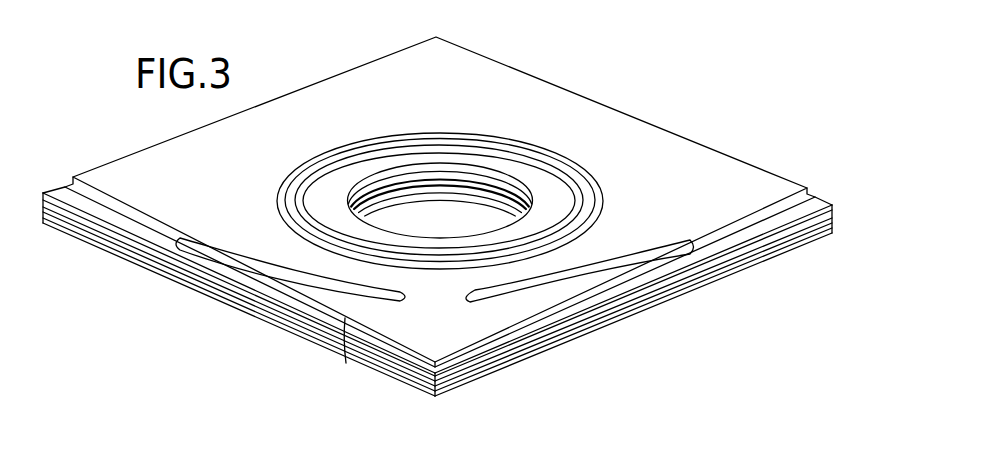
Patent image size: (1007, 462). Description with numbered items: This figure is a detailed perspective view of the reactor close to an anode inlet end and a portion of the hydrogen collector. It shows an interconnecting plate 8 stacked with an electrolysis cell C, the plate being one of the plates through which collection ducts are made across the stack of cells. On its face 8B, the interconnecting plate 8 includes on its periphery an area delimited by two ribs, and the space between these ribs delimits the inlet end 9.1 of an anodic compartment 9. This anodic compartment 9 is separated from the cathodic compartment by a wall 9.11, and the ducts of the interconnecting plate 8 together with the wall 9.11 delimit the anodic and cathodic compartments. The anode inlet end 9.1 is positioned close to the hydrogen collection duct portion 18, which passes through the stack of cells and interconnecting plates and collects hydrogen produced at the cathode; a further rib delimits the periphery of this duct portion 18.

The face of interconnecting plate 8B is at (460, 73).
The anodic compartment 9 is at (698, 194).
The interconnecting plate 8 is at (834, 233).
The hydrogen collection duct portion 18 is at (481, 229).
The anode inlet end 9.1 is at (447, 300).
The wall 9.11 is at (415, 315).
The electrolysis cell C is at (337, 340).